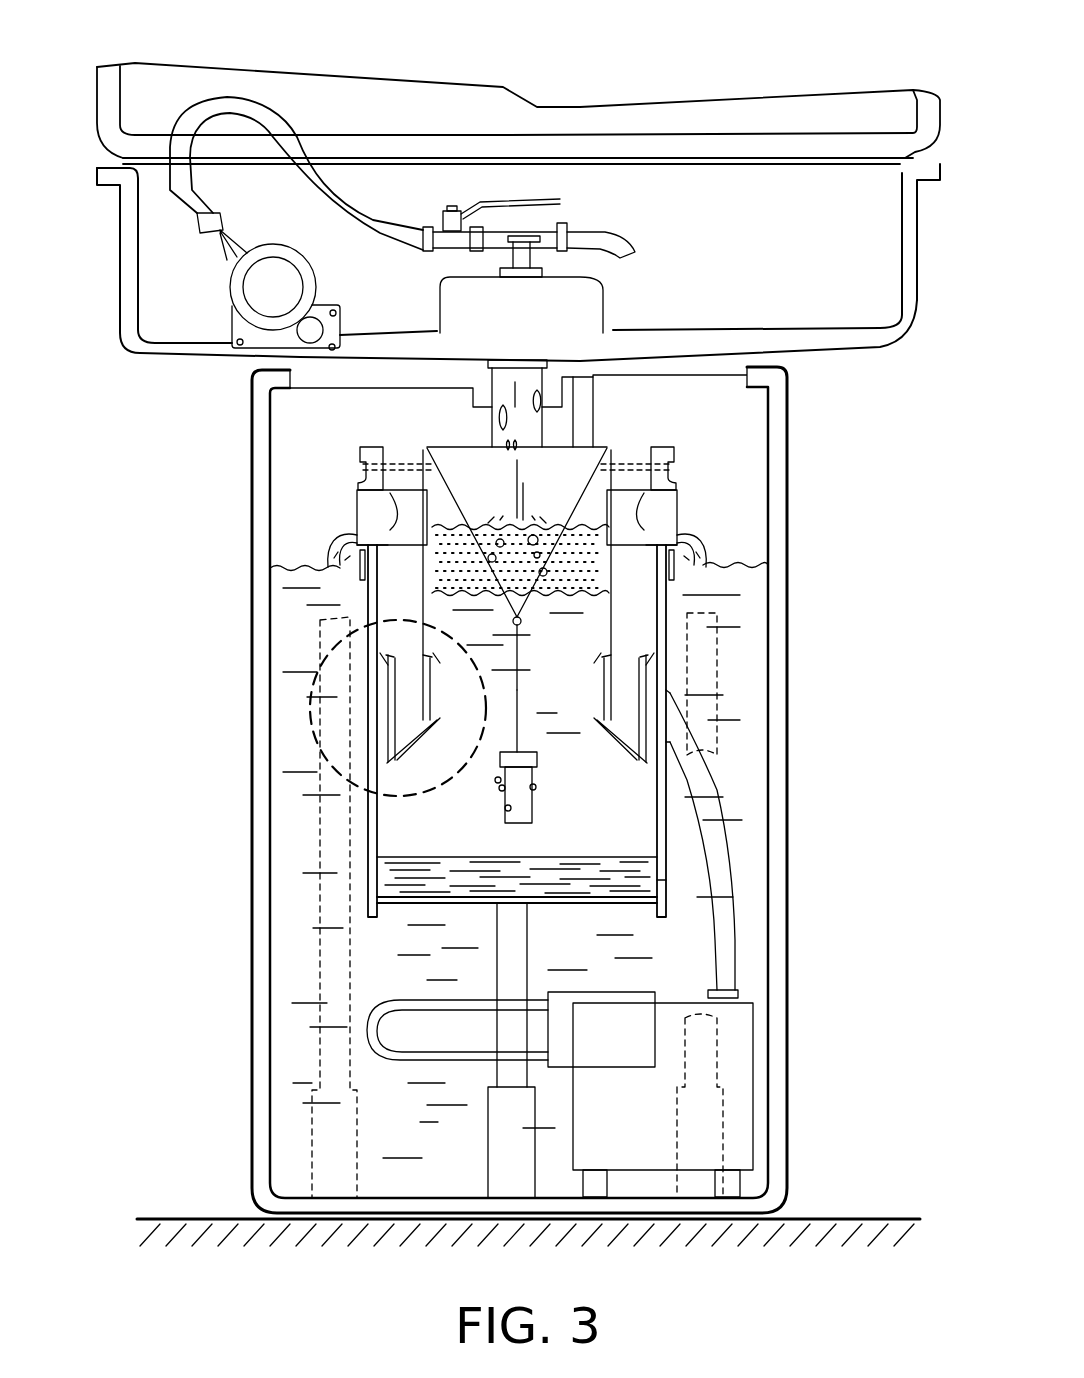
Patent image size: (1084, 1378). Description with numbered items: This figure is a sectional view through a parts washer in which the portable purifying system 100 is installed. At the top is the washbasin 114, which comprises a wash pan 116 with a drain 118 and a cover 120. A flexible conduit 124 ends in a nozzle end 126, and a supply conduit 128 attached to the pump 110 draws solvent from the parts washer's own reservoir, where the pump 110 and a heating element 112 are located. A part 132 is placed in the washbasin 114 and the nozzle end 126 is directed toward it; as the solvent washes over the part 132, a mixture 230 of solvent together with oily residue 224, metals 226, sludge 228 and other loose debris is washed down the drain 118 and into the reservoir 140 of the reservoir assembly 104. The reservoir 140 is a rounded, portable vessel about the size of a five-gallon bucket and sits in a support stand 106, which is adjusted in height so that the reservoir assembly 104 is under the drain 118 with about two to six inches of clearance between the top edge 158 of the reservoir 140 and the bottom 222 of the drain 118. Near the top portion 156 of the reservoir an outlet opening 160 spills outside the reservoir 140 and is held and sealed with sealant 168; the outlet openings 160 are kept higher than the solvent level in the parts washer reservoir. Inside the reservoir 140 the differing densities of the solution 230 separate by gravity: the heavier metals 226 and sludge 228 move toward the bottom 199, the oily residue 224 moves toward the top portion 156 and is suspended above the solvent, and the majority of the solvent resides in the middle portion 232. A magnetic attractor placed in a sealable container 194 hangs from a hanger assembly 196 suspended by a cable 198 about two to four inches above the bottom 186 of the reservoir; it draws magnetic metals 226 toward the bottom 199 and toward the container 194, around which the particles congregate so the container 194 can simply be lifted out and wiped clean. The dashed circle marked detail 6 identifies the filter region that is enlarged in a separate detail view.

The detail 6— 6 is at (317, 747).
The portable purifying system 100 is at (363, 907).
The reservoir assembly 104 is at (367, 843).
The support stand 106 is at (720, 683).
The pump 110 is at (737, 1053).
The heating element 112 is at (372, 1036).
The washbasin 114 is at (140, 287).
The wash pan 116 is at (200, 350).
The drain 118 is at (545, 352).
The cover 120 is at (117, 62).
The flexible conduit 124 is at (250, 97).
The nozzle end 126 is at (200, 233).
The supply conduit 128 is at (730, 840).
The part 132 is at (232, 318).
The reservoir 140 is at (667, 775).
The top portion 156 is at (672, 562).
The top edge 158 is at (677, 450).
The outlet opening 160 is at (680, 512).
The sealant 168 is at (680, 485).
The bottom 186 is at (270, 1192).
The sealable container 194 is at (530, 803).
The hanger assembly 196 is at (535, 646).
The cable 198 is at (535, 693).
The bottom 199 is at (653, 888).
The bottom of the drain 222 is at (600, 417).
The oily residue 224 is at (440, 583).
The metals 226 is at (505, 808).
The sludge 228 is at (383, 873).
The mixture 230 is at (485, 430).
The middle portion 232 is at (363, 663).